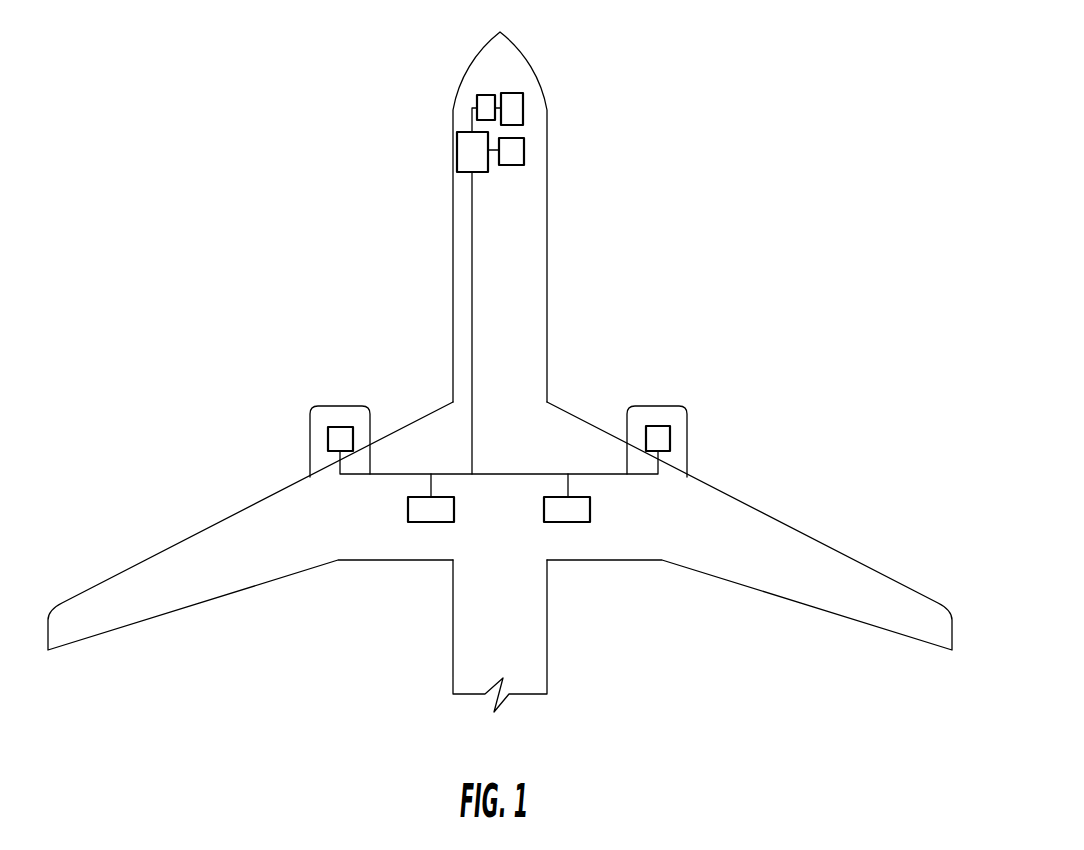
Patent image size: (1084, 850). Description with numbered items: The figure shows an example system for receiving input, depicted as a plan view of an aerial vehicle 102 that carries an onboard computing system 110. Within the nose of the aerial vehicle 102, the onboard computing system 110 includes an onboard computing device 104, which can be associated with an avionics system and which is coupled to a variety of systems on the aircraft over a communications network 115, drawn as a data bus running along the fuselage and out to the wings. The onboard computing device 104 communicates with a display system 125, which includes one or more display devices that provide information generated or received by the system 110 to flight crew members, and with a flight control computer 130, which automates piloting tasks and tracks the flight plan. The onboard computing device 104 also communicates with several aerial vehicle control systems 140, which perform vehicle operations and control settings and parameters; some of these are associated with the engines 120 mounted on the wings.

The onboard computing system 110 is at (707, 74).
The aerial vehicle 102 is at (523, 250).
The onboard computing device 104 is at (462, 153).
The communications network 115 is at (472, 321).
The engine 120 is at (347, 413).
The display system 125 is at (513, 97).
The flight control computer 130 is at (486, 96).
The aerial vehicle control system 140 is at (515, 153).